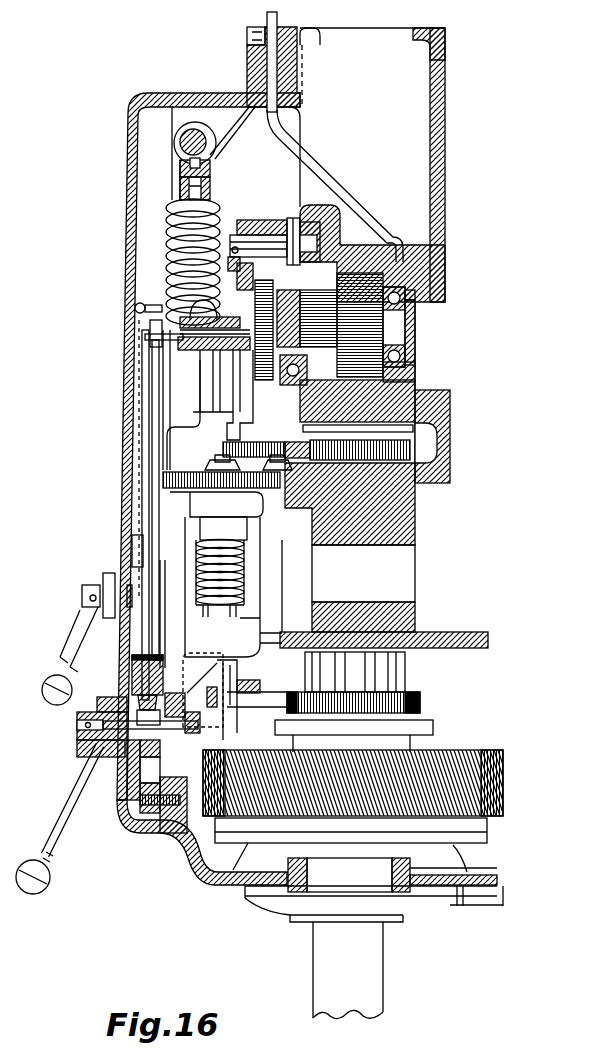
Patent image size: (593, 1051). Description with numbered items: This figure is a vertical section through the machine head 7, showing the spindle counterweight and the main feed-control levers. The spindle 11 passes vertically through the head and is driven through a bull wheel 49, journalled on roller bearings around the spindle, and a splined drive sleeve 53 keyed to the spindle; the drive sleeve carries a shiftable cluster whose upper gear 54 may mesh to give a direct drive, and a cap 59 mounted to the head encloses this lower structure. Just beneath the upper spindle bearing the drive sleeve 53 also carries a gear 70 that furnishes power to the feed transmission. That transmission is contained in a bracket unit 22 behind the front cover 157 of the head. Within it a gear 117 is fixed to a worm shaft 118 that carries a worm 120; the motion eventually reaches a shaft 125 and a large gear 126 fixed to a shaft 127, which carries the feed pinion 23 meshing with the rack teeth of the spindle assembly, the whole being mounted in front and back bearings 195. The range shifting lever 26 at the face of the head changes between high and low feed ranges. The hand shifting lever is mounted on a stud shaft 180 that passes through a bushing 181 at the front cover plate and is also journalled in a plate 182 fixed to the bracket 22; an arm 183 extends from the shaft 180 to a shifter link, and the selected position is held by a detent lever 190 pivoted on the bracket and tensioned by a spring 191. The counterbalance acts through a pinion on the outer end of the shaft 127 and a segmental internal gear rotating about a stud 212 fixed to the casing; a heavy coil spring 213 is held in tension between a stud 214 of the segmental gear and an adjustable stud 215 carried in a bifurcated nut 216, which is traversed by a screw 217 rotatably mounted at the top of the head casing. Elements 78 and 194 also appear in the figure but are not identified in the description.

The housing 7 is at (120, 271).
The spindle 11 is at (373, 950).
The bracket unit 22 is at (176, 768).
The feed pinion 23 is at (412, 322).
The range shifting lever 26 is at (43, 681).
The bull wheel 49 is at (503, 778).
The splined drive sleeve 53 is at (398, 668).
The upper gear of cluster 54 is at (422, 703).
The cap 59 is at (428, 914).
The gear 70 is at (408, 450).
The gear 78 is at (223, 448).
The gear 117 is at (183, 473).
The worm shaft 118 is at (220, 528).
The worm 120 is at (240, 577).
The shaft 125 is at (306, 370).
The large gear 126 is at (253, 373).
The shaft 127 is at (319, 326).
The front cover 157 is at (132, 549).
The stud shaft 180 is at (77, 727).
The bushing 181 is at (100, 747).
The plate 182 is at (133, 797).
The arm 183 is at (132, 687).
The detent lever 190 is at (141, 468).
The spring 191 is at (135, 309).
The slide bar 194 is at (152, 517).
The front and back bearings 195 is at (413, 305).
The stud 212 is at (254, 247).
The coil spring 213 is at (220, 210).
The stud 214 is at (183, 336).
The adjustable stud 215 is at (210, 179).
The bifurcated nut 216 is at (208, 158).
The screw 217 is at (210, 145).